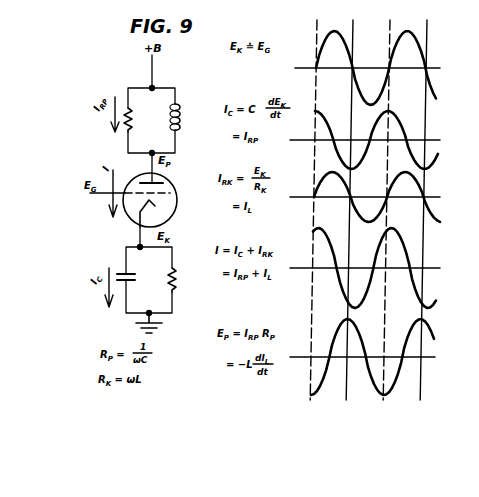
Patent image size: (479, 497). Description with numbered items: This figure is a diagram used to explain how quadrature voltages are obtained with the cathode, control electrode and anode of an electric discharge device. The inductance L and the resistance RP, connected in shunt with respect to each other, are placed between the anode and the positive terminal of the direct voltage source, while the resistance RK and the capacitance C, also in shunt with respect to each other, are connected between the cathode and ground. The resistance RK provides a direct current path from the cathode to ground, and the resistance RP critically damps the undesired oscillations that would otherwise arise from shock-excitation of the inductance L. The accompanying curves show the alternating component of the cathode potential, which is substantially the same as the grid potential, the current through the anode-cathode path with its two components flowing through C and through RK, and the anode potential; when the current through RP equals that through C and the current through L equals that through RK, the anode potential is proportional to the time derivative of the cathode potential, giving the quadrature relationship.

The resistance RP is at (138, 120).
The inductance L is at (182, 117).
The capacitance C is at (128, 284).
The resistance RK is at (183, 283).